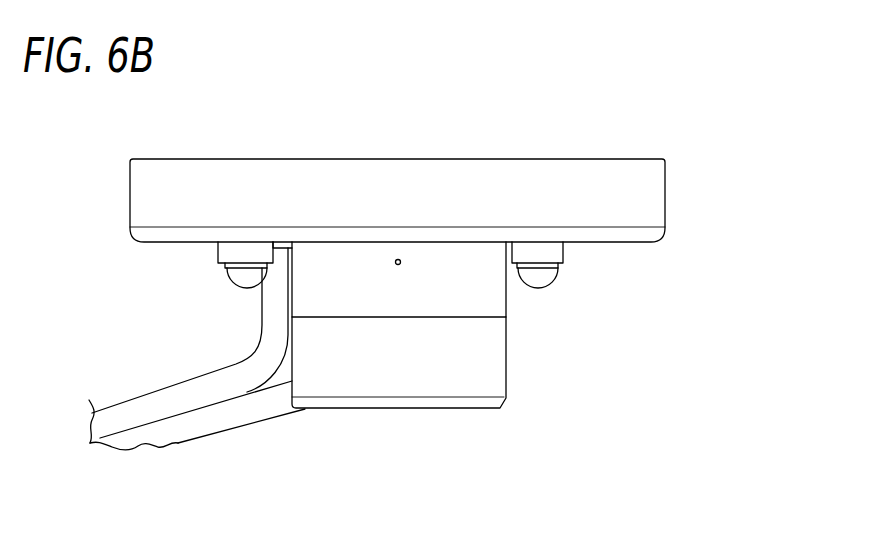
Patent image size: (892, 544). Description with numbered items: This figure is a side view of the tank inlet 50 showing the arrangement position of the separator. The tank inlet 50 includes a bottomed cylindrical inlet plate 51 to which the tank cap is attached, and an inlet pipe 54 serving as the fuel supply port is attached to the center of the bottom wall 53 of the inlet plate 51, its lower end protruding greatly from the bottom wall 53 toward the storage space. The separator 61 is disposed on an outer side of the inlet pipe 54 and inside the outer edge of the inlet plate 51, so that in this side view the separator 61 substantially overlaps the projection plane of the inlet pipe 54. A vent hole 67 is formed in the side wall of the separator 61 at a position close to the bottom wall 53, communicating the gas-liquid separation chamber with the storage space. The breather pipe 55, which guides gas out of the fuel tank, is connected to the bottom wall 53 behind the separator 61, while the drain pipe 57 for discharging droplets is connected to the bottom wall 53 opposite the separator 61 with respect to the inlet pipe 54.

The tank inlet 50 is at (640, 103).
The inlet plate 51 is at (130, 172).
The bottom wall 53 is at (613, 246).
The inlet pipe 54 is at (506, 345).
The breather pipe 55 is at (187, 377).
The drain pipe 57 is at (234, 430).
The separator 61 is at (508, 298).
The vent hole 67 is at (398, 258).